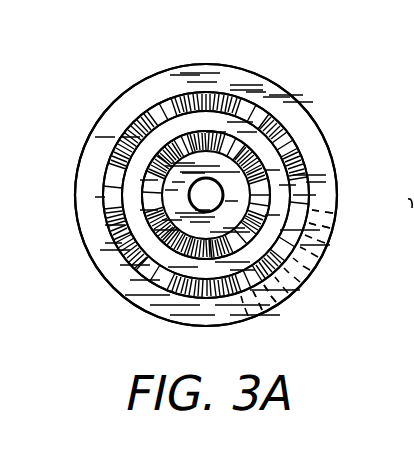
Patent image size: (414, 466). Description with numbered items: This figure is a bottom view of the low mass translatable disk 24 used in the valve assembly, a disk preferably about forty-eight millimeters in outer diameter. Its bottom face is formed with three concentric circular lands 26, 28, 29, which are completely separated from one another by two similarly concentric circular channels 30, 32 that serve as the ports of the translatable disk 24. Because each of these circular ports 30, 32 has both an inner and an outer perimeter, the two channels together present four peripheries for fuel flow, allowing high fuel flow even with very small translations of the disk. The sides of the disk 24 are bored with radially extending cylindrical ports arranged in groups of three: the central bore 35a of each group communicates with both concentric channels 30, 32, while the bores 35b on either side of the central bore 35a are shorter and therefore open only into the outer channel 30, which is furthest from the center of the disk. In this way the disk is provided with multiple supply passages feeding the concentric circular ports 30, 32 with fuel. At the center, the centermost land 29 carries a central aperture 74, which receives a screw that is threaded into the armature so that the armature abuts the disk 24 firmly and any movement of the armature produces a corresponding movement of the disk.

The translatable disk 24 is at (119, 295).
The circular land 26 is at (93, 156).
The circular land 28 is at (208, 122).
The centermost land 29 is at (177, 153).
The circular channel 30 is at (250, 214).
The circular channel 32 is at (274, 153).
The central bore 35a is at (247, 245).
The bore 35b is at (272, 212).
The central aperture 74 is at (202, 196).